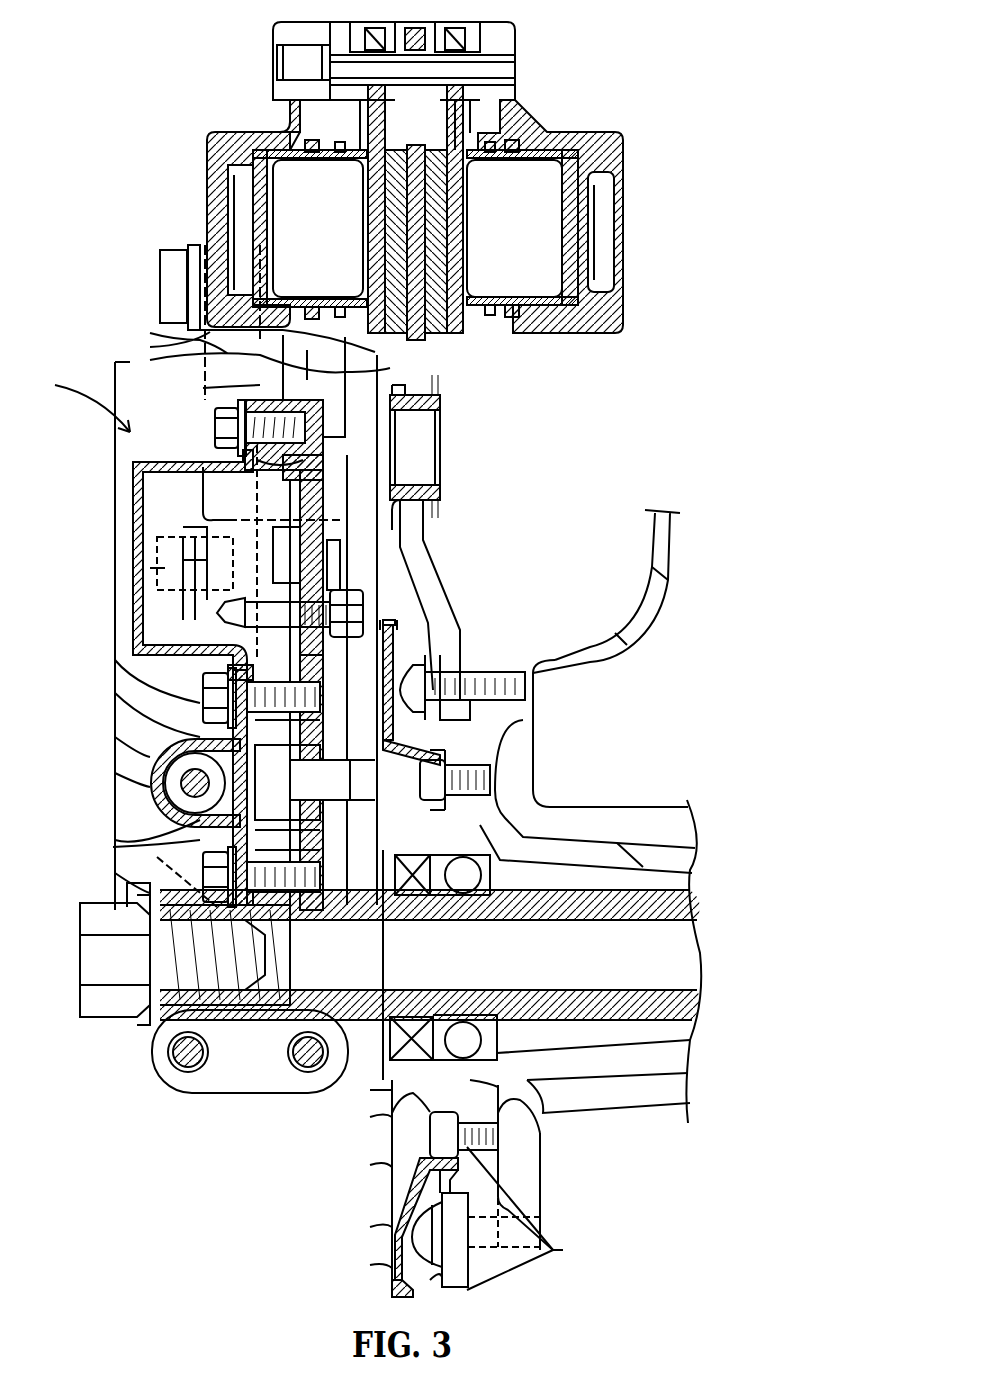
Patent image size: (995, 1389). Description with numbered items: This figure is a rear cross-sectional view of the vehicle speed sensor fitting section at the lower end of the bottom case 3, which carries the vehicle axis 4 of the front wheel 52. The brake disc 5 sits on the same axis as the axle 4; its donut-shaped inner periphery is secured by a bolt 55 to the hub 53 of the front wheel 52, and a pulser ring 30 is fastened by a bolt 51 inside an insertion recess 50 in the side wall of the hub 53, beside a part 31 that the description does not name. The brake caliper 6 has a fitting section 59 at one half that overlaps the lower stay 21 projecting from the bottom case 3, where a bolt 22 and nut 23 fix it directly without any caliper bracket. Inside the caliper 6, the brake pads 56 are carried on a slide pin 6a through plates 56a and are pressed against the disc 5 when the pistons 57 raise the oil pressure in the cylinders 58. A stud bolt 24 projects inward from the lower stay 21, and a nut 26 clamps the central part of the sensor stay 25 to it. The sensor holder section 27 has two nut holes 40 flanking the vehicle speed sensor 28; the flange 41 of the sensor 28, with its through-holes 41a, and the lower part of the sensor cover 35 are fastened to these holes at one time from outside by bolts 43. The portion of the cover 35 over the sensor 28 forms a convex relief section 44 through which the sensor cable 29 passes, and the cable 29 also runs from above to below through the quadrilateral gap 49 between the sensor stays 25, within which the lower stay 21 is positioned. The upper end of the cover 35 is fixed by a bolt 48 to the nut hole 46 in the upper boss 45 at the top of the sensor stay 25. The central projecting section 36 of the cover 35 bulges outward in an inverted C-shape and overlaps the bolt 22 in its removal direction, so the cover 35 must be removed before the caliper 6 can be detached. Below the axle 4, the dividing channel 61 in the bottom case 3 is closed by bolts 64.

The bottom case 3 is at (115, 365).
The vehicle axis 4 is at (702, 955).
The brake disc 5 is at (435, 465).
The brake caliper 6 is at (418, 207).
The slide pin 6a is at (485, 62).
The lower stay 21 is at (230, 540).
The bolt 22 is at (135, 567).
The nut 23 is at (343, 553).
The stud bolt 24 is at (220, 610).
The sensor stay 25 is at (407, 500).
The nut 26 is at (390, 585).
The sensor holder section 27 is at (500, 800).
The vehicle speed sensor 28 is at (455, 762).
The sensor cable 29 is at (181, 783).
The pulser ring 30 is at (392, 1240).
The pulser ring edge 31 is at (392, 1290).
The sensor cover 35 is at (72, 400).
The projecting section 36 is at (133, 470).
The nut holes 40 is at (325, 690).
The flange 41 is at (235, 840).
The through-holes 41a is at (240, 672).
The bolts 43 is at (210, 697).
The relief section 44 is at (170, 755).
The upper boss 45 is at (280, 360).
The nut hole 46 is at (225, 393).
The bolt 48 is at (222, 425).
The gap 49 is at (165, 500).
The insertion recess 50 is at (405, 1190).
The bolt 51 is at (430, 1125).
The front wheel 52 is at (650, 1122).
The hub 53 is at (540, 1105).
The bolt 55 is at (490, 645).
The brake pads 56 is at (395, 197).
The plates 56a is at (290, 118).
The pistons 57 is at (235, 132).
The cylinders 58 is at (600, 175).
The fitting section 59 is at (323, 350).
The dividing channel 61 is at (240, 1118).
The bolts 64 is at (185, 1075).